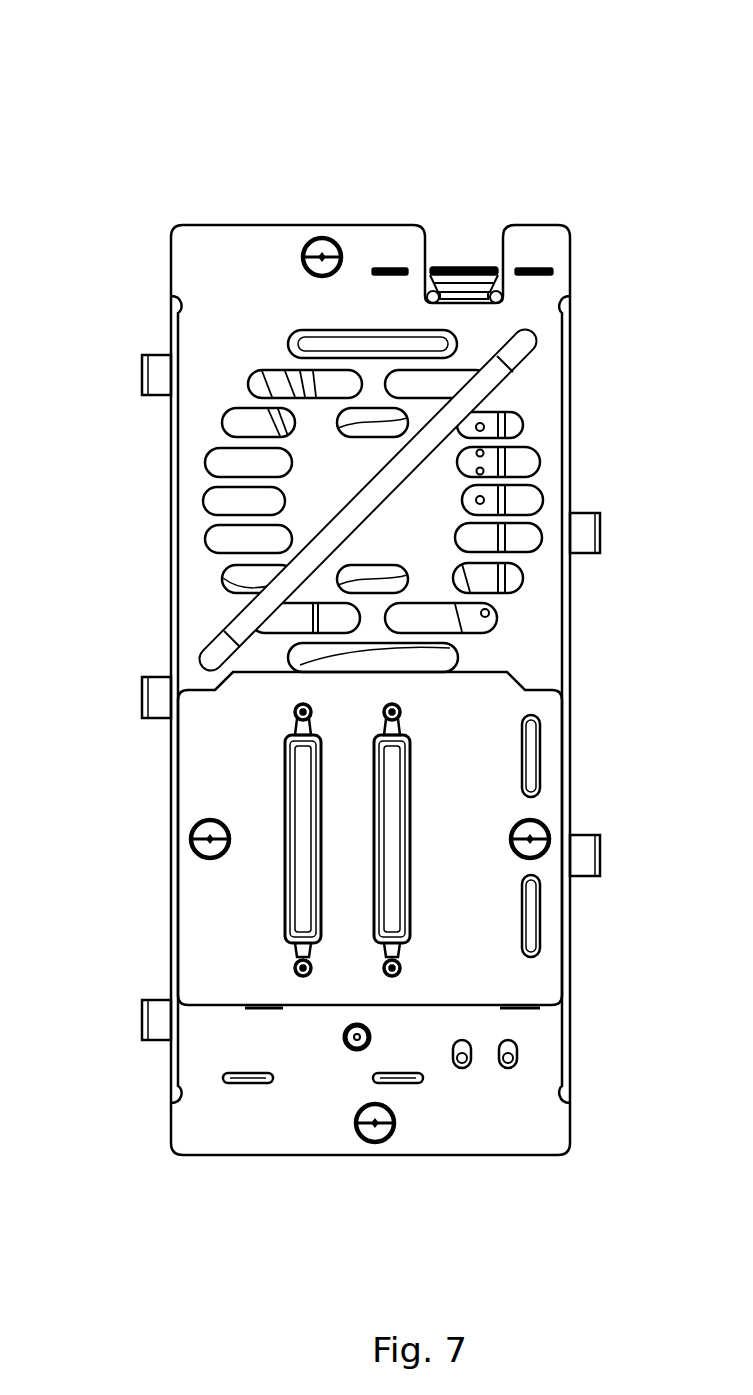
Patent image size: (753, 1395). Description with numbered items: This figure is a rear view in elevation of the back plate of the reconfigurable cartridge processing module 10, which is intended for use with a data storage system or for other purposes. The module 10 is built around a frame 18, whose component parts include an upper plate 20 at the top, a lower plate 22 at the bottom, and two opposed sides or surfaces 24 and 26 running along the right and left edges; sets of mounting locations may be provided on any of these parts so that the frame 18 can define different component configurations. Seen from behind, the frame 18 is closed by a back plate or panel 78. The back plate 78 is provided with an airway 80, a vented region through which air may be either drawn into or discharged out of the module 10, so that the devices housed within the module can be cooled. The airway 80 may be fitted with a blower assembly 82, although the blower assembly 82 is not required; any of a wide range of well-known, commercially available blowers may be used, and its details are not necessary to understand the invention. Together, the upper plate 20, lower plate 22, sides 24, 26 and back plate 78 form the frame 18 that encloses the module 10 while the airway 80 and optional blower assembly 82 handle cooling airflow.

The reconfigurable cartridge processing module 10 is at (126, 58).
The frame 18 is at (283, 222).
The upper plate 20 is at (470, 267).
The lower plate 22 is at (478, 1157).
The side 24 is at (571, 398).
The side 26 is at (172, 466).
The back plate 78 is at (249, 296).
The airway 80 is at (225, 565).
The blower assembly 82 is at (230, 497).